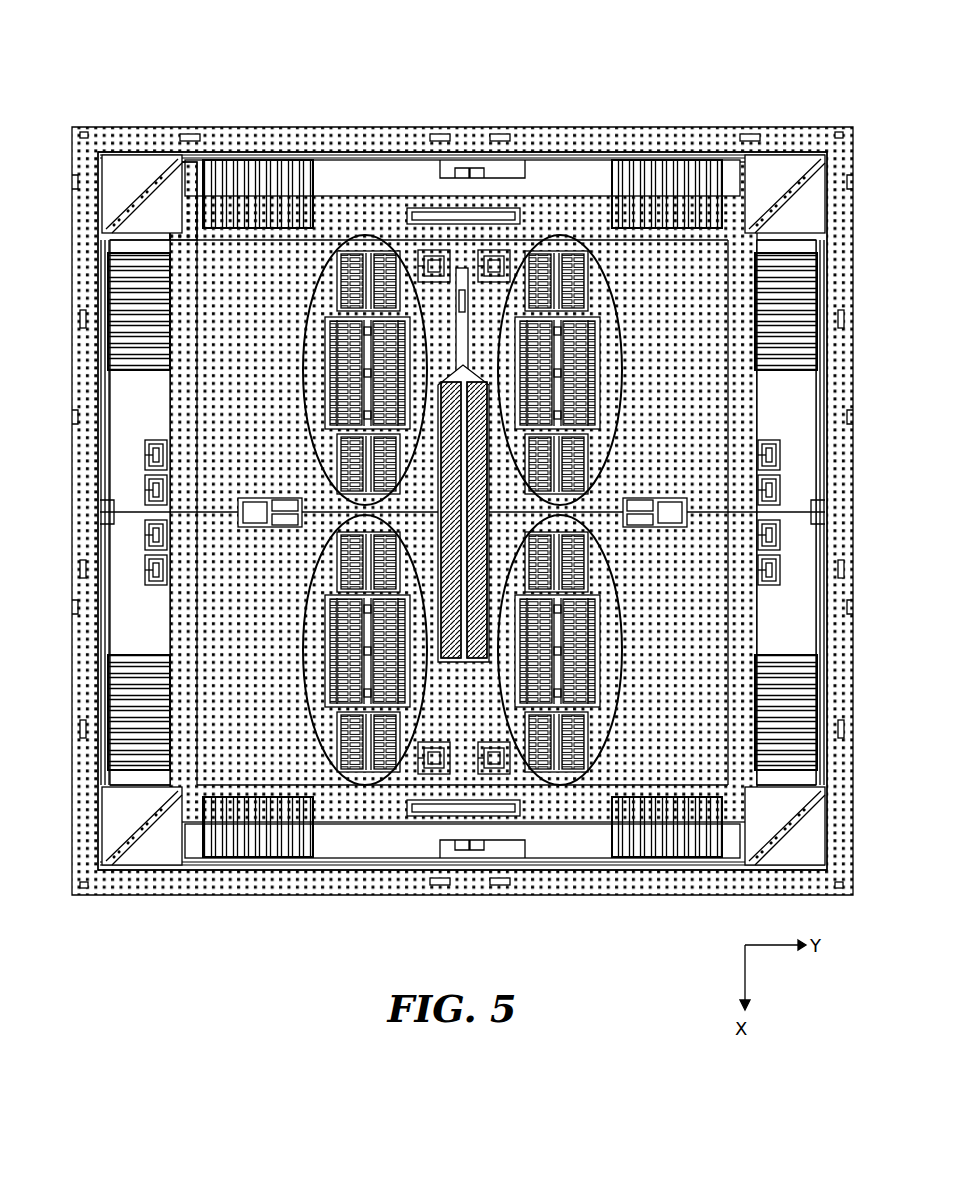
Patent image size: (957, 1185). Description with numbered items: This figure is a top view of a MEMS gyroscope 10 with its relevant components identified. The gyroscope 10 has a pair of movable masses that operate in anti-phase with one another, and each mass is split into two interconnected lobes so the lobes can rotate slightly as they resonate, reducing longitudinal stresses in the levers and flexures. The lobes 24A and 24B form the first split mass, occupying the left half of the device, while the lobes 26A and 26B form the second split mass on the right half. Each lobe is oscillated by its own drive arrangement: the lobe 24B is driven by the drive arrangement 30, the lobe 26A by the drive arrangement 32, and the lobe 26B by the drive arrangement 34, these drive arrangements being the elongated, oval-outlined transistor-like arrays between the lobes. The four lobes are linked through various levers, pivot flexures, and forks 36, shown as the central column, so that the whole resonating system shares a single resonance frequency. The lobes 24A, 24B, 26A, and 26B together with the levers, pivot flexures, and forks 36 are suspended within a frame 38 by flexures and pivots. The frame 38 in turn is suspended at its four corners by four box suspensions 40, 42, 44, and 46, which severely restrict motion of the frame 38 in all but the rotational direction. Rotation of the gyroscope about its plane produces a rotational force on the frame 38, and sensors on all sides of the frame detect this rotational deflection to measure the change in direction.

The MEMS gyroscope 10 is at (455, 75).
The lobe 24A is at (289, 374).
The lobe 24B is at (291, 662).
The lobe 26A is at (686, 376).
The lobe 26B is at (676, 664).
The drive arrangement 30 is at (365, 786).
The drive arrangement 32 is at (365, 234).
The drive arrangement 34 is at (556, 784).
The levers, pivot flexures, and forks 36 is at (463, 465).
The frame 38 is at (190, 800).
The box suspension 40 is at (164, 223).
The box suspension 42 is at (164, 821).
The box suspension 44 is at (782, 223).
The box suspension 46 is at (782, 823).